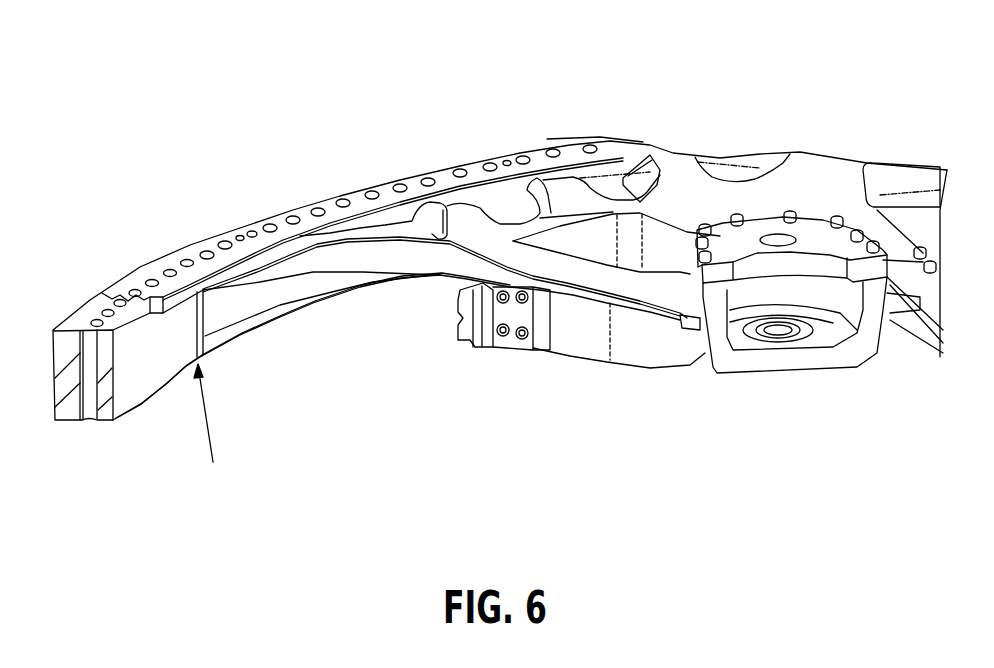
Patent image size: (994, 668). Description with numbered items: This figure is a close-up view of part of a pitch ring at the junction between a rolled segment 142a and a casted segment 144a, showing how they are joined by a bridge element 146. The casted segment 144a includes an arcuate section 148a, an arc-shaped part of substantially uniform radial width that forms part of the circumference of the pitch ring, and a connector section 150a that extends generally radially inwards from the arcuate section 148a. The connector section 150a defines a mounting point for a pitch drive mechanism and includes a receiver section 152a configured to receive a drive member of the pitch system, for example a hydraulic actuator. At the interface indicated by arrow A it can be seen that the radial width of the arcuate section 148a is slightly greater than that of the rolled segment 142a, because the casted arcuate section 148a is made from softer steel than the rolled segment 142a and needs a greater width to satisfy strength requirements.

The rolled segment 142a is at (67, 393).
The casted segment 144a is at (527, 138).
The bridge element 146 is at (227, 238).
The arcuate section 148a is at (468, 167).
The connector section 150a is at (688, 192).
The receiver section 152a is at (810, 233).